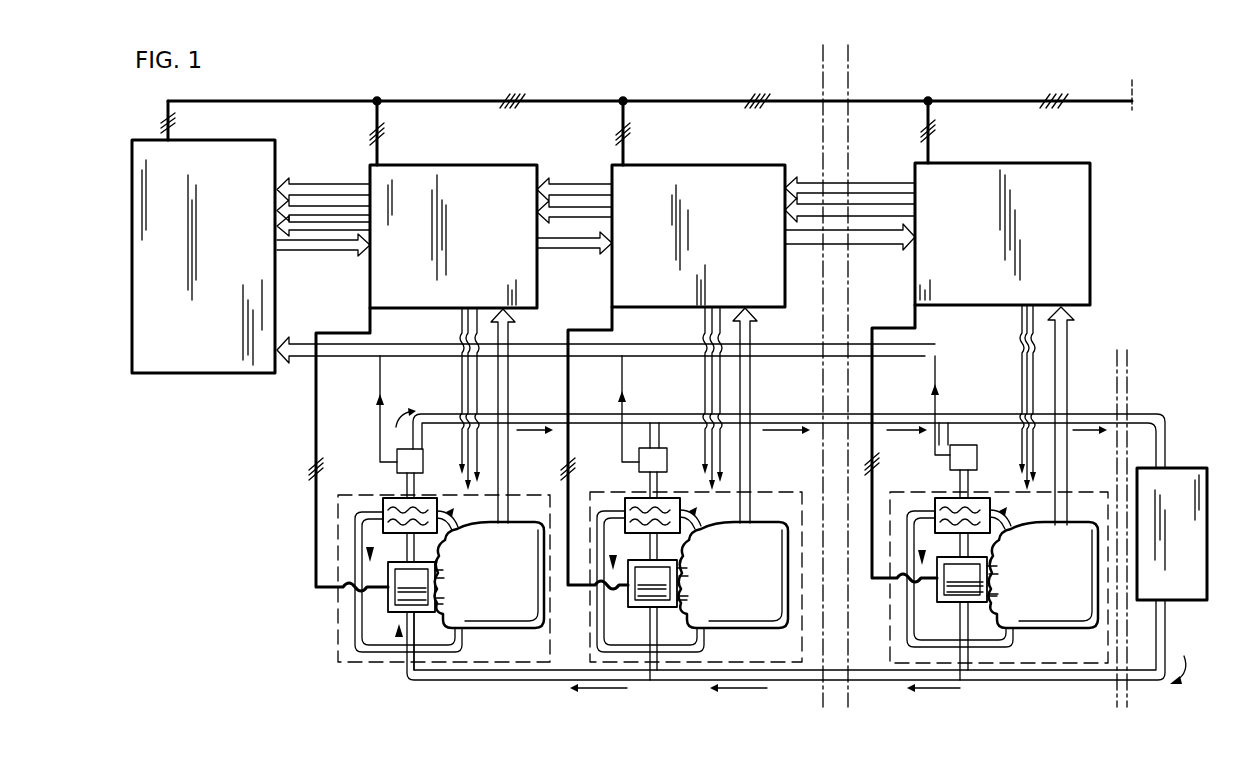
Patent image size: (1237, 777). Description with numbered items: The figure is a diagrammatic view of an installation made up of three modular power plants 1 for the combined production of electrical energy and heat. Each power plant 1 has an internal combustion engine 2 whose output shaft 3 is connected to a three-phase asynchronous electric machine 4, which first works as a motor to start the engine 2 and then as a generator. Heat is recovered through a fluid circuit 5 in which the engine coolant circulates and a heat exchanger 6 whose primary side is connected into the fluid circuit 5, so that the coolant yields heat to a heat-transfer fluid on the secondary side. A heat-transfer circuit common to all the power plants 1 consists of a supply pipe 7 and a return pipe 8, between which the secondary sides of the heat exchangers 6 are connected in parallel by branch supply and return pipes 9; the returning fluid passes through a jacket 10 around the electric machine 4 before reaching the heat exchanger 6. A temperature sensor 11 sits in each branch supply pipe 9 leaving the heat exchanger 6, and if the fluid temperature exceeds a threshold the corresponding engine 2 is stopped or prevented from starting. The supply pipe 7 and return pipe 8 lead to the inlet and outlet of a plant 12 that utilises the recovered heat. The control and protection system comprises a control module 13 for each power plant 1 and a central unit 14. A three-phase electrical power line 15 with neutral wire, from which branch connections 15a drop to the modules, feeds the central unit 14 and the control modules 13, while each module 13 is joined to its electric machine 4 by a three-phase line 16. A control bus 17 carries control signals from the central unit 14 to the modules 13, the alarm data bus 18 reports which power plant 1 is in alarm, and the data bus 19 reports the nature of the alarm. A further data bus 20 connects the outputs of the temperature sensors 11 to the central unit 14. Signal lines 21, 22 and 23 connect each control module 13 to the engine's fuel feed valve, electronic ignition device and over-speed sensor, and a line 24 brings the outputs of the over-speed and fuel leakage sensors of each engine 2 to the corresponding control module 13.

The modular power plant 1 is at (338, 650).
The internal combustion engine 2 is at (490, 620).
The output shaft 3 is at (452, 603).
The three-phase asynchronous electric machine 4 is at (400, 598).
The fluid circuit 5 is at (448, 508).
The heat exchanger 6 is at (383, 505).
The supply pipe 7 is at (423, 416).
The return pipe 8 is at (445, 682).
The branch supply and return pipes 9 is at (407, 488).
The jacket 10 is at (440, 573).
The temperature sensor 11 is at (423, 460).
The plant 12 is at (1190, 505).
The control module 13 is at (473, 173).
The central unit 14 is at (148, 352).
The three-phase electrical power line 15 is at (434, 101).
The branch line 15a is at (378, 153).
The three-phase line 16 is at (316, 405).
The control bus 17 is at (332, 248).
The alarm data bus 18 is at (283, 228).
The data bus 19 is at (320, 188).
The data bus 20 is at (338, 350).
The signal line 21 is at (462, 332).
The signal line 22 is at (462, 370).
The signal line 23 is at (477, 388).
The line 24 is at (508, 340).